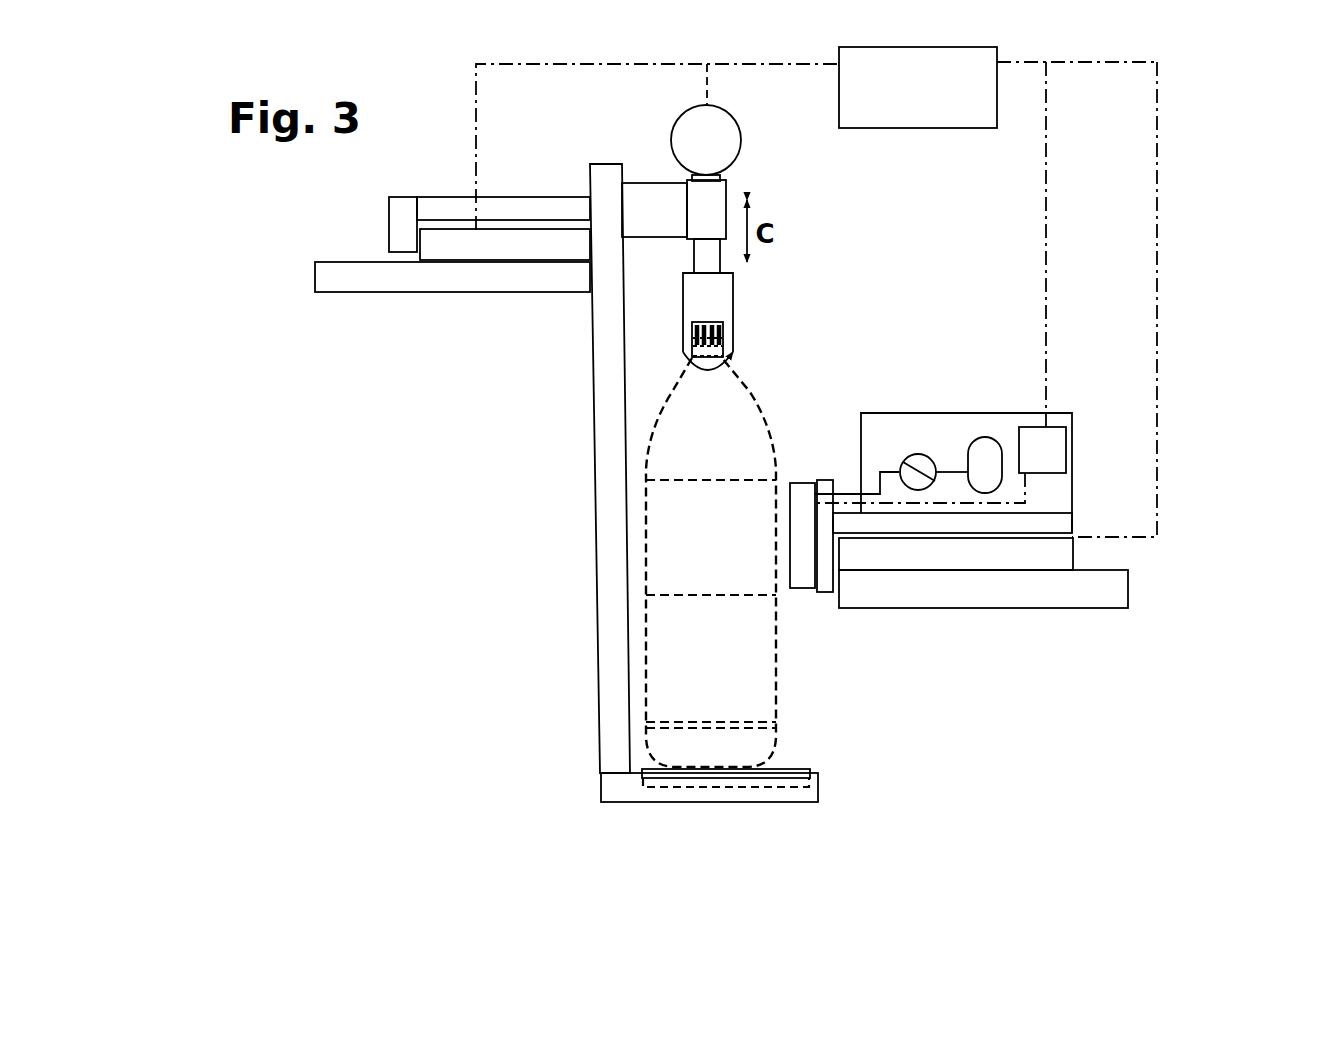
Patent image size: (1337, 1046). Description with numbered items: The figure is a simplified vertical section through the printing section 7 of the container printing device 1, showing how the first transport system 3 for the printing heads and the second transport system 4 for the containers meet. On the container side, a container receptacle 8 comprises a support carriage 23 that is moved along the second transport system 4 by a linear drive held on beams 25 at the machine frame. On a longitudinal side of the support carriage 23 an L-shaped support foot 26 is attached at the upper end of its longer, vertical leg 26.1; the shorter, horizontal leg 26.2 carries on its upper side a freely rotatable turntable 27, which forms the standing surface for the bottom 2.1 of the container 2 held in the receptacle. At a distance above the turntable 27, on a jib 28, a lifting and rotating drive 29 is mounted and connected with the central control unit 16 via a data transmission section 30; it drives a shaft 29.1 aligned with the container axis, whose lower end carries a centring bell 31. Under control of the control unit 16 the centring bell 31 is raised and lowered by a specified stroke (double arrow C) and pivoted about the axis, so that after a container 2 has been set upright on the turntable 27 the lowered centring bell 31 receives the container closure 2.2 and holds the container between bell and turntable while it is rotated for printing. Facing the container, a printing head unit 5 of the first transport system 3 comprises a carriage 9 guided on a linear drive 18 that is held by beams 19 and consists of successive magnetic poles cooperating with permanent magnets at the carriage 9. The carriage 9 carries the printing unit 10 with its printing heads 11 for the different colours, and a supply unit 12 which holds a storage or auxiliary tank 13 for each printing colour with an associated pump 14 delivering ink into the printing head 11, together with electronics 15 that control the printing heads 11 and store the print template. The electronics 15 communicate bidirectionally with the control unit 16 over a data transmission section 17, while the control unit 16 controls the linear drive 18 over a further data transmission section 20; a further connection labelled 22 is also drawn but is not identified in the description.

The device 1 is at (397, 667).
The container 2 is at (650, 663).
The container bottom 2.1 is at (717, 765).
The container closure 2.2 is at (685, 343).
The first transport system 3 is at (1160, 553).
The second transport system 4 is at (315, 328).
The printing head unit 5 is at (893, 390).
The printing section 7 is at (1030, 715).
The container receptacle 8 is at (515, 529).
The carriage 9 is at (1036, 520).
The printing unit 10 is at (830, 618).
The printing head 11 is at (795, 487).
The supply unit 12 is at (1015, 408).
The storage or auxiliary tank 13 is at (985, 445).
The pump 14 is at (918, 468).
The electronics 15 is at (1047, 455).
The central control unit 16 is at (922, 108).
The data transmission section 17 is at (1047, 240).
The linear drive 18 is at (915, 557).
The beams 19 is at (1047, 590).
The data transmission section 20 is at (1158, 308).
The control line 22 is at (475, 133).
The support carriage 23 is at (490, 248).
The beams 25 is at (413, 283).
The L-shaped support foot 26 is at (597, 597).
The longer leg 26.1 is at (603, 448).
The shorter horizontal leg 26.2 is at (635, 785).
The turntable 27 is at (770, 772).
The jib 28 is at (657, 202).
The lifting and rotating drive 29 is at (733, 143).
The shaft 29.1 is at (697, 262).
The data transmission section 30 is at (712, 88).
The centring bell 31 is at (713, 302).